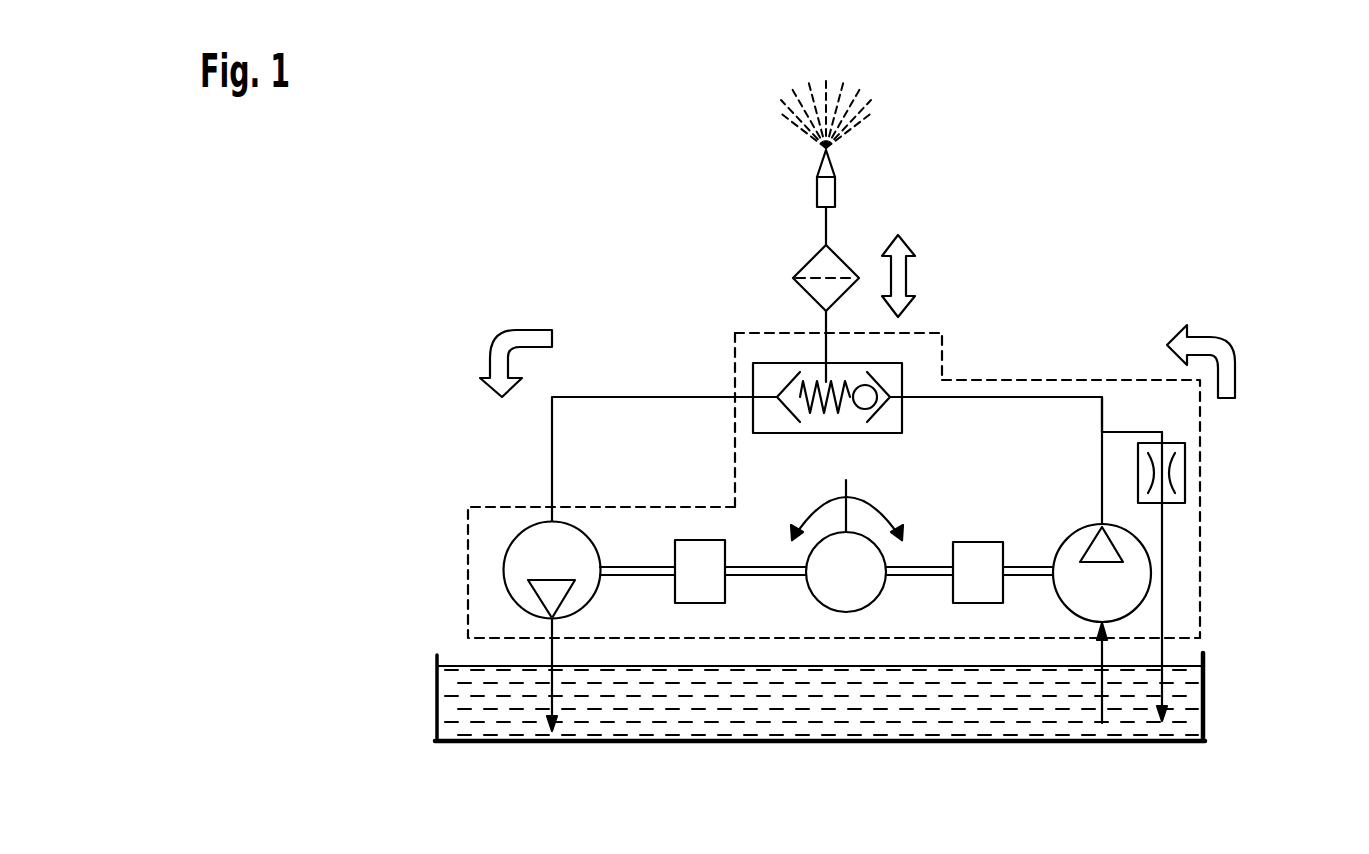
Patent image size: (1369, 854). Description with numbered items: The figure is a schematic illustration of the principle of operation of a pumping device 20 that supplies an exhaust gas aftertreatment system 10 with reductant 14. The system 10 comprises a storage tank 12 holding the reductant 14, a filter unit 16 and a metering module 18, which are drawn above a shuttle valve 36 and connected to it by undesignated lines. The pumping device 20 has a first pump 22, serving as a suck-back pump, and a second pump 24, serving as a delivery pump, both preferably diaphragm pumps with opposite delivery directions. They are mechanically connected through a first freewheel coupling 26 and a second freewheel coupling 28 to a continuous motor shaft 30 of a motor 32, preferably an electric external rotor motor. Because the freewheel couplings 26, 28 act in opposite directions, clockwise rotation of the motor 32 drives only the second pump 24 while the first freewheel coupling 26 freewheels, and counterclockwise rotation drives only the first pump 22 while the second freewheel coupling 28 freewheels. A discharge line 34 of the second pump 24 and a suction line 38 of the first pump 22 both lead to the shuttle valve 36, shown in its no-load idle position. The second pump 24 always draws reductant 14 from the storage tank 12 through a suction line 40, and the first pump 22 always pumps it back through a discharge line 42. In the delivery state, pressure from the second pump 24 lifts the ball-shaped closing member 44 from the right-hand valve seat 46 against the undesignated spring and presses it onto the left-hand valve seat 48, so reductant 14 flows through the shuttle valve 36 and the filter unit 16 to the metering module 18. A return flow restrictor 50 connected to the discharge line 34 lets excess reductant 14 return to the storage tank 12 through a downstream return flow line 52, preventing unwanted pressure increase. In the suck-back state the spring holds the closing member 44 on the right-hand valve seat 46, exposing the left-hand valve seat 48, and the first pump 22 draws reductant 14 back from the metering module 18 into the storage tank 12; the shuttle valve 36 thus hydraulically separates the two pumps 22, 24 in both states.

The exhaust gas aftertreatment system 10 is at (528, 201).
The storage tank 12 is at (437, 708).
The reductant 14 is at (821, 702).
The filter unit 16 is at (818, 270).
The metering module 18 is at (831, 193).
The pumping device 20 is at (468, 543).
The first pump 22 is at (515, 577).
The second pump 24 is at (1140, 578).
The first freewheel coupling 26 is at (700, 571).
The second freewheel coupling 28 is at (978, 572).
The motor shaft 30 is at (772, 564).
The motor 32 is at (860, 597).
The discharge line 34 is at (1058, 392).
The shuttle valve 36 is at (753, 407).
The suction line 38 is at (552, 448).
The suction line 40 is at (1102, 698).
The discharge line 42 is at (550, 690).
The closing member 44 is at (868, 392).
The right-hand valve seat 46 is at (883, 405).
The left-hand valve seat 48 is at (793, 376).
The return flow restrictor 50 is at (1175, 470).
The return flow line 52 is at (1162, 652).